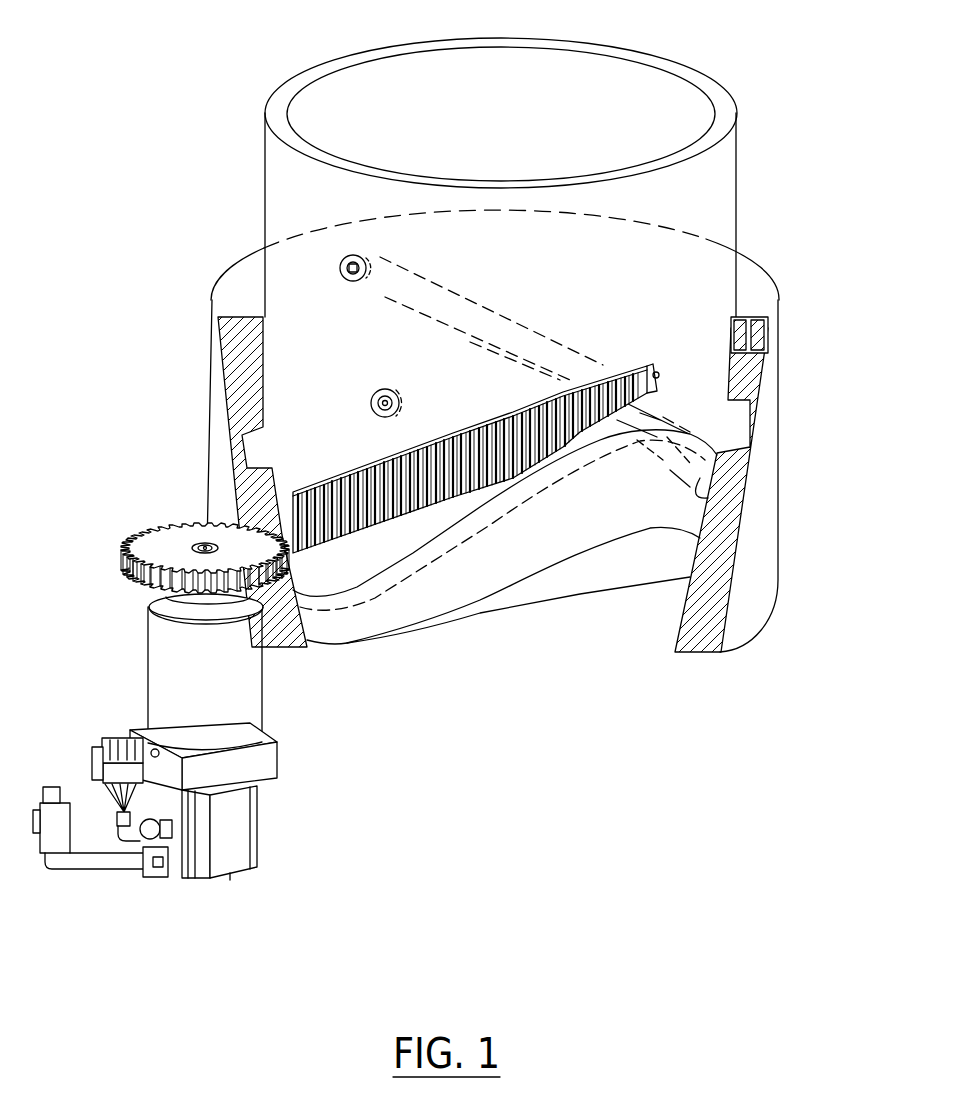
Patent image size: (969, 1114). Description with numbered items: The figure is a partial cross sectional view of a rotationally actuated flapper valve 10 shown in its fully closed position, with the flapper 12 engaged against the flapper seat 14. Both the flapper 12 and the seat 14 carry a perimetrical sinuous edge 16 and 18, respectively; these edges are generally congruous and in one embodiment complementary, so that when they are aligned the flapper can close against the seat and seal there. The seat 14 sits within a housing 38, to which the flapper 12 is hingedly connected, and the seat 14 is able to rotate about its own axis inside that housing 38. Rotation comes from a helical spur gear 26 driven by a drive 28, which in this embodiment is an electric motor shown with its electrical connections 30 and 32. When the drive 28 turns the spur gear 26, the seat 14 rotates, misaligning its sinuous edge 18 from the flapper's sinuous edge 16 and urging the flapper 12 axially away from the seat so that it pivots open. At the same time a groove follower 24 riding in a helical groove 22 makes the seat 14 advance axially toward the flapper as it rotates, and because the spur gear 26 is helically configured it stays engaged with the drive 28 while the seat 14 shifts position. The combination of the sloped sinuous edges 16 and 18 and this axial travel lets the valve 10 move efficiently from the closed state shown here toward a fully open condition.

The rotationally actuated flapper valve 10 is at (172, 80).
The flapper 12 is at (543, 532).
The flapper seat 14 is at (713, 203).
The sinuous edge 16 is at (367, 587).
The sinuous edge 18 is at (682, 427).
The helical groove 22 is at (467, 315).
The groove follower 24 is at (340, 266).
The helical spur gear 26 is at (310, 510).
The drive 28 is at (128, 660).
The electrical connection 30 is at (55, 827).
The electrical connection 32 is at (123, 772).
The housing 38 is at (737, 507).